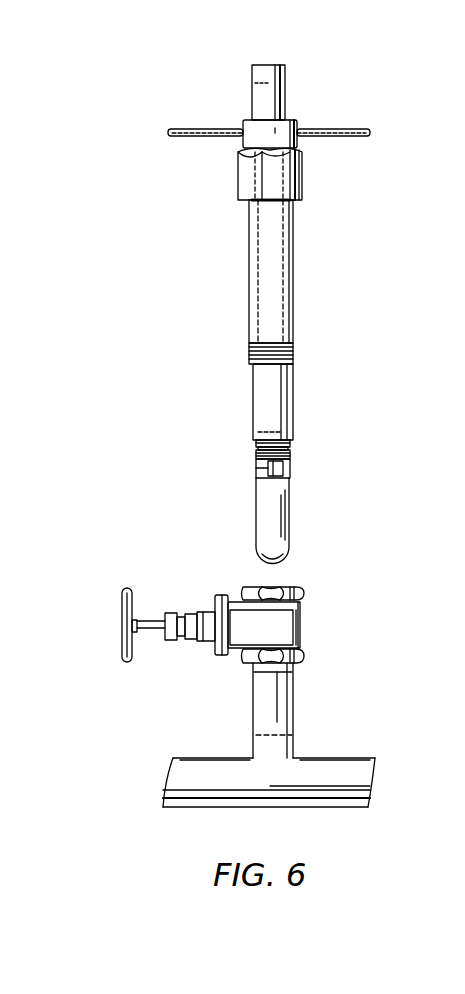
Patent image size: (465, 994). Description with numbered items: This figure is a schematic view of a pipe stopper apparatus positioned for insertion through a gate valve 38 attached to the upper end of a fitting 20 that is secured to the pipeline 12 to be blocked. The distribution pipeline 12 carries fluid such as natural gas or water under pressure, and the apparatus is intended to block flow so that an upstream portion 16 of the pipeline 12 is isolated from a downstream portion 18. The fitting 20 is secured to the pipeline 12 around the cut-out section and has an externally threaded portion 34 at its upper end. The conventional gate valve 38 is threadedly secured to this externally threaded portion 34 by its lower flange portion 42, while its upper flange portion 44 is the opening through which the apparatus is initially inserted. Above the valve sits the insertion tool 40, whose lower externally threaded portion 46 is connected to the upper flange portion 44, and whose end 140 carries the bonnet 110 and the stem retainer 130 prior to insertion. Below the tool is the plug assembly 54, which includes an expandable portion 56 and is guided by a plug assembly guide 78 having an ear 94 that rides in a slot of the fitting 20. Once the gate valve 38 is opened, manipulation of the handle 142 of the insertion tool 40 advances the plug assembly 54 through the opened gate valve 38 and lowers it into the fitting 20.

The distribution pipeline 12 is at (327, 801).
The upstream portion 16 is at (225, 757).
The downstream portion 18 is at (348, 758).
The fitting 20 is at (243, 705).
The externally threaded portion 34 is at (255, 672).
The gate valve 38 is at (247, 608).
The insertion tool 40 is at (243, 332).
The lower flange portion 42 is at (305, 656).
The upper flange portion 44 is at (303, 596).
The lower externally threaded portion 46 is at (291, 348).
The plug assembly 54 is at (261, 521).
The expandable portion 56 is at (276, 546).
The plug assembly guide 78 is at (283, 468).
The ear 94 is at (268, 468).
The bonnet 110 is at (291, 453).
The stem retainer 130 is at (292, 441).
The end 140 is at (275, 388).
The handle 142 is at (370, 131).